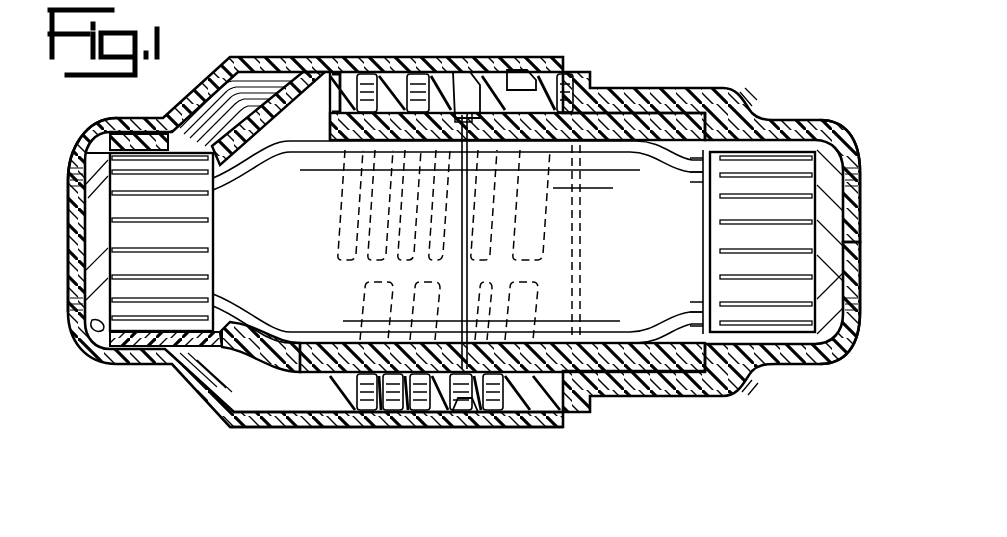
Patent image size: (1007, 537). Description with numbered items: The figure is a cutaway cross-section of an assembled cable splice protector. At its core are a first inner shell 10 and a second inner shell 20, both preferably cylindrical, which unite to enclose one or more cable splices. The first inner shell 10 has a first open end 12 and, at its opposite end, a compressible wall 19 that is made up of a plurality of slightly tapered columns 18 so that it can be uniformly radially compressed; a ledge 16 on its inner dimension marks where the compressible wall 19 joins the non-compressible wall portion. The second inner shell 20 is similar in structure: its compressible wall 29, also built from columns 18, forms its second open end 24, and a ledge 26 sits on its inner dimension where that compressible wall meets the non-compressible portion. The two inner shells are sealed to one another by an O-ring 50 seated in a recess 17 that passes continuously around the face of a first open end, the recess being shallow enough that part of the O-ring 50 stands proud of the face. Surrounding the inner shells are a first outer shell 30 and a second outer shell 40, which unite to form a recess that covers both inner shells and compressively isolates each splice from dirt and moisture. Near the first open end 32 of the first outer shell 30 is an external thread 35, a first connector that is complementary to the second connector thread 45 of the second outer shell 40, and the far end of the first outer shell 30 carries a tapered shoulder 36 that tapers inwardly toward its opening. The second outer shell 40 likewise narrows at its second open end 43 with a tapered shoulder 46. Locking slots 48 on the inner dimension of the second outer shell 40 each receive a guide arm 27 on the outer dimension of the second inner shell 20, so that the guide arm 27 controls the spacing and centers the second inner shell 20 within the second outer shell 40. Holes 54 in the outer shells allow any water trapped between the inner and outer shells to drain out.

The first inner shell 10 is at (690, 375).
The first open end 12 is at (850, 248).
The ledge 16 is at (713, 153).
The recess 17 is at (462, 80).
The columns 18 is at (103, 266).
The compressible wall 19 is at (780, 293).
The second inner shell 20 is at (262, 405).
The second open end 24 is at (112, 182).
The ledge 26 is at (205, 388).
The guide arm 27 is at (302, 86).
The compressible wall 29 is at (155, 332).
The first outer shell 30 is at (740, 100).
The first open end 32 is at (858, 245).
The external thread 35 is at (389, 412).
The tapered shoulder 36 is at (828, 133).
The second outer shell 40 is at (330, 430).
The second open end 43 is at (68, 215).
The second connector thread 45 is at (100, 336).
The tapered shoulder 46 is at (82, 150).
The locking slot 48 is at (336, 68).
The O-ring 50 is at (460, 122).
The holes 54 is at (764, 96).